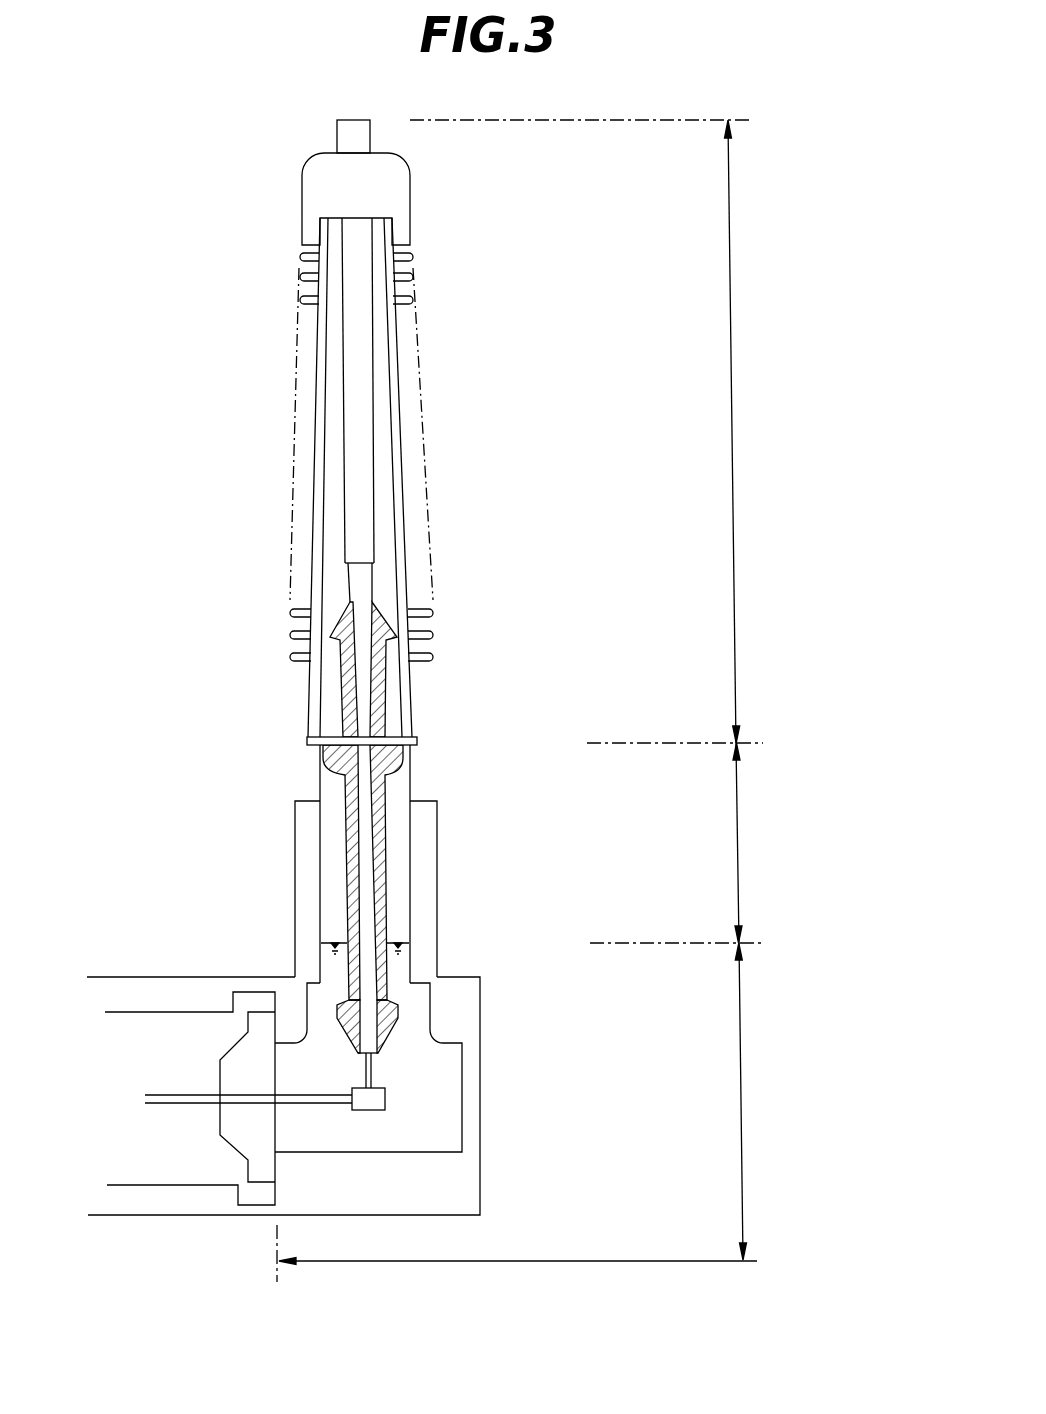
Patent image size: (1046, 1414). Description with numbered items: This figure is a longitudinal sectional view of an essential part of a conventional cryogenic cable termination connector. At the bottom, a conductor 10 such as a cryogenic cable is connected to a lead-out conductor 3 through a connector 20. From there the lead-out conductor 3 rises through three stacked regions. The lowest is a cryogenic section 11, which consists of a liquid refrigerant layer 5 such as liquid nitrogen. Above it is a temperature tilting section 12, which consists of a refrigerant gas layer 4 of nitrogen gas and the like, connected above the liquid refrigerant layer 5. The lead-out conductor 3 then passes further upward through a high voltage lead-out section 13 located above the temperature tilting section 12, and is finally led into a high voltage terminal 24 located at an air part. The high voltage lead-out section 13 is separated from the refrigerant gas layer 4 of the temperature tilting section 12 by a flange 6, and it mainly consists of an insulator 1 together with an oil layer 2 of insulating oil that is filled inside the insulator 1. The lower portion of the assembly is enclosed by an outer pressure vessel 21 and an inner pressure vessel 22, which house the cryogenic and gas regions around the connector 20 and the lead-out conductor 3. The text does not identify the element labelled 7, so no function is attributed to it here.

The insulator 1 is at (413, 280).
The oil layer 2 is at (380, 415).
The lead-out conductor 3 is at (367, 725).
The refrigerant gas layer 4 is at (390, 840).
The liquid refrigerant layer 5 is at (407, 1007).
The flange 6 is at (417, 742).
The conductor 7 is at (362, 538).
The conductor 10 is at (188, 1100).
The cryogenic section 11 is at (586, 1112).
The temperature tilting section 12 is at (605, 863).
The high voltage lead-out section 13 is at (665, 431).
The connector 20 is at (387, 1104).
The outer pressure vessel 21 is at (485, 1002).
The inner pressure vessel 22 is at (463, 1085).
The high voltage terminal 24 is at (317, 202).